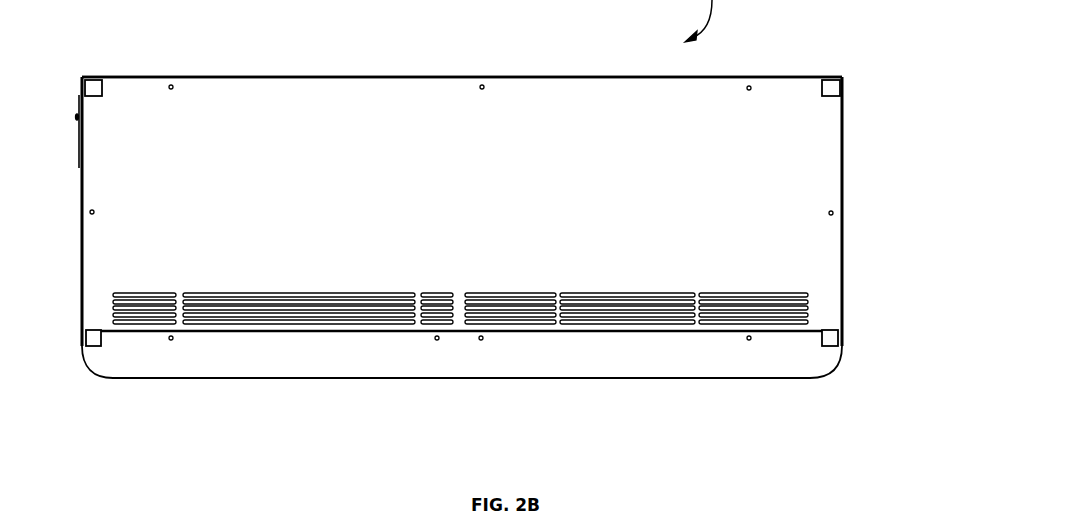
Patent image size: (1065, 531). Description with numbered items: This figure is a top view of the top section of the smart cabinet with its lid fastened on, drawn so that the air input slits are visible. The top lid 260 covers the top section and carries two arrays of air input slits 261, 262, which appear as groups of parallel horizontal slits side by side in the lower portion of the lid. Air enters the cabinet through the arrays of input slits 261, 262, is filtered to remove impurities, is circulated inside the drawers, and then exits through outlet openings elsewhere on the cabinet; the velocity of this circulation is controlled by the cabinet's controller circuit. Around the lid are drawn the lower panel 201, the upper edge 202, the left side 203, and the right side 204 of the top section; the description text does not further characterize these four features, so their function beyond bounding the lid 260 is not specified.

The bottom panel 201 is at (425, 378).
The top edge 202 is at (428, 78).
The left side 203 is at (82, 215).
The right side 204 is at (842, 215).
The top lid 260 is at (493, 188).
The array of air input slits 261 is at (246, 293).
The array of air input slits 262 is at (607, 293).